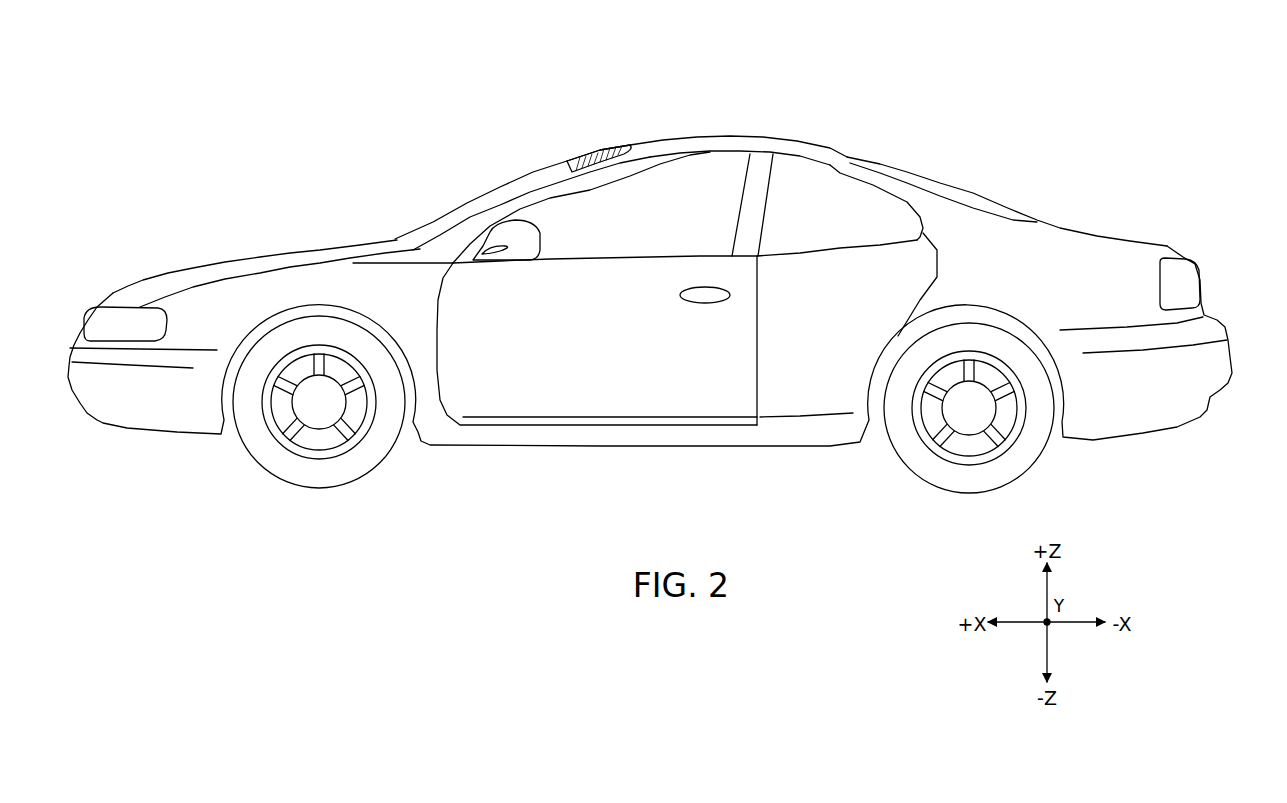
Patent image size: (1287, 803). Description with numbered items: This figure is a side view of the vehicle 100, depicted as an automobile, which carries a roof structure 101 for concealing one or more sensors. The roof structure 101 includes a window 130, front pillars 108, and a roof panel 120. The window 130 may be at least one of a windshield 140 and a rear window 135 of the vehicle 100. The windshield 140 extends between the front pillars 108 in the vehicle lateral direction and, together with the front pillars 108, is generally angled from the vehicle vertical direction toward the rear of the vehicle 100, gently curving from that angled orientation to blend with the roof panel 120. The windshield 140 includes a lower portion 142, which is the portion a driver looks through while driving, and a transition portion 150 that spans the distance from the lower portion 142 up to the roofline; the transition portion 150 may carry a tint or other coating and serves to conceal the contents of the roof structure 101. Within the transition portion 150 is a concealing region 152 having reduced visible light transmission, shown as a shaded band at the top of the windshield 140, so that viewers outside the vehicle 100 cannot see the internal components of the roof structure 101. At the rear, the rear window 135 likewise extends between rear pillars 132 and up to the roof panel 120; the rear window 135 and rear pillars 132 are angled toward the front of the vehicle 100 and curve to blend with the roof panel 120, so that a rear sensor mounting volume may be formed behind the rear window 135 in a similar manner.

The vehicle 100 is at (650, 273).
The roof structure 101 is at (707, 84).
The front pillars 108 is at (570, 188).
The roof panel 120 is at (740, 95).
The window 130 is at (459, 169).
The rear pillars 132 is at (860, 187).
The rear window 135 is at (1007, 167).
The windshield 140 is at (531, 166).
The lower portion 142 is at (413, 231).
The transition portion 150 is at (596, 108).
The concealing region 152 is at (625, 143).